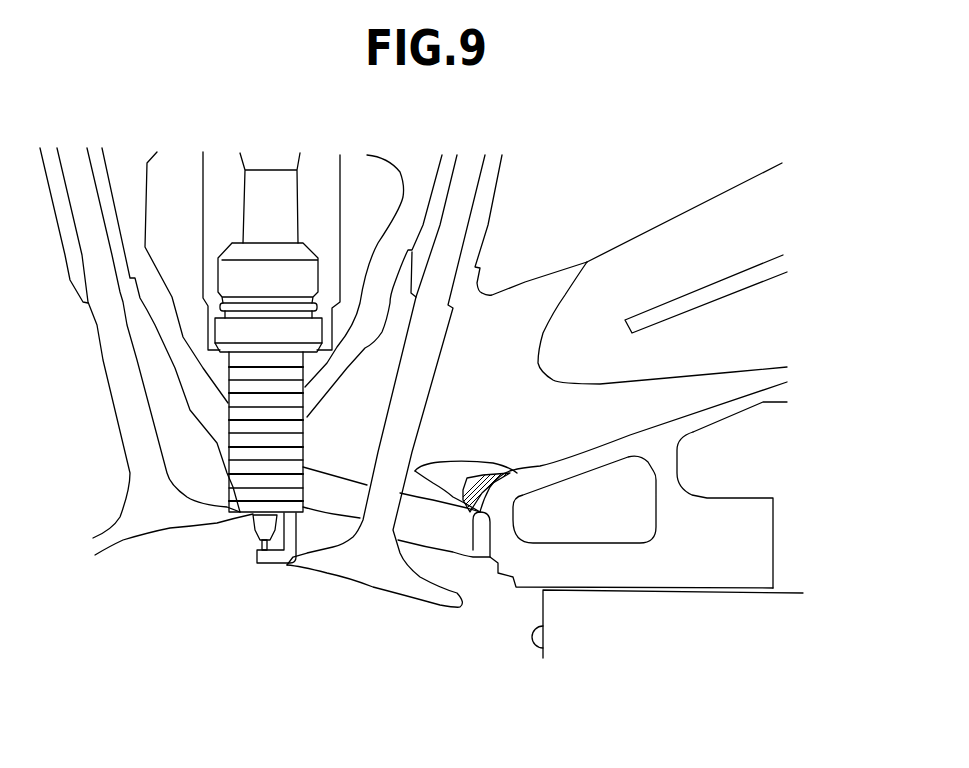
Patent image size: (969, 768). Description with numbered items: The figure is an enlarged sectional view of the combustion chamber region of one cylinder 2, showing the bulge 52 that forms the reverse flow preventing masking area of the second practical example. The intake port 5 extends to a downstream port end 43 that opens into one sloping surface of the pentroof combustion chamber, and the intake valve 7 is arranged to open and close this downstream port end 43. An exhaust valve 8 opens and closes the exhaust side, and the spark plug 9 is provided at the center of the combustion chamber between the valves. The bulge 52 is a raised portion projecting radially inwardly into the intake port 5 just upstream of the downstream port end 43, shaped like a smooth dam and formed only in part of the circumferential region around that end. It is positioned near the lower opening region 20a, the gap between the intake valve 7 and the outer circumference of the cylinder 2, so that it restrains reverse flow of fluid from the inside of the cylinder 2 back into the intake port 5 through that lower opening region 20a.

The intake port 5 is at (513, 307).
The bulge 52 is at (460, 477).
The downstream port end 43 is at (337, 490).
The exhaust valve 8 is at (162, 518).
The spark plug 9 is at (253, 538).
The intake valve 7 is at (375, 563).
The lower opening region 20a is at (475, 582).
The cylinder 2 is at (543, 648).